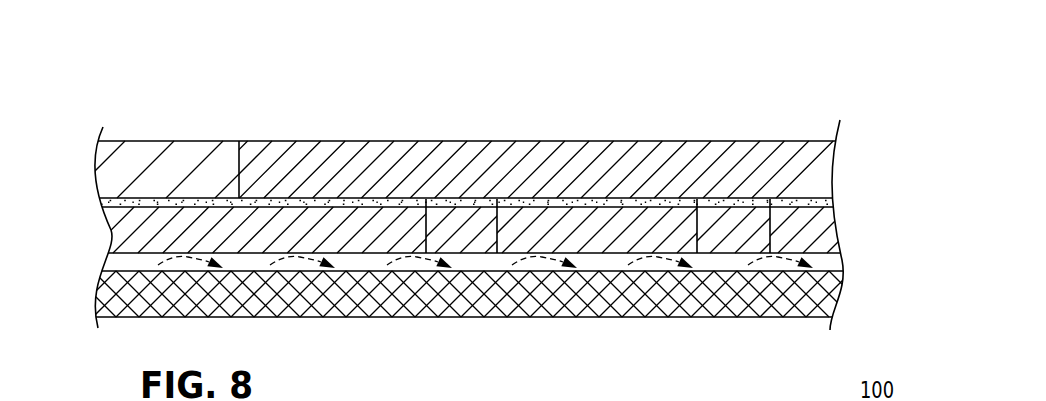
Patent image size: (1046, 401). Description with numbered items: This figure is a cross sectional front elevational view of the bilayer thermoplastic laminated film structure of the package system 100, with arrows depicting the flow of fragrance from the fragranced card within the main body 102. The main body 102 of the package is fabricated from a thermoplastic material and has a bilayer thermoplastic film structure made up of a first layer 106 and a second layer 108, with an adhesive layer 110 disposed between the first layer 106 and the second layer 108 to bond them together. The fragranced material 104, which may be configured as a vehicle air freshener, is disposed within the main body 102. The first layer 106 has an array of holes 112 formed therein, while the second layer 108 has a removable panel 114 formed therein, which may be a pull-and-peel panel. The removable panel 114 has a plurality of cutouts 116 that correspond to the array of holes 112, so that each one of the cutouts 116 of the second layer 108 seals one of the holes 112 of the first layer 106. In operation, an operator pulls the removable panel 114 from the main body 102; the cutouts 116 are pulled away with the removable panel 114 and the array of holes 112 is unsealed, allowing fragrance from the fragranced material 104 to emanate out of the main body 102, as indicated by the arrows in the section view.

The package system 100 is at (818, 73).
The main body 102 is at (93, 201).
The fragranced material 104 is at (452, 306).
The first layer 106 is at (112, 231).
The second layer 108 is at (165, 139).
The adhesive layer 110 is at (357, 198).
The holes 112 is at (767, 244).
The removable panel 114 is at (298, 140).
The cutouts 116 is at (697, 226).